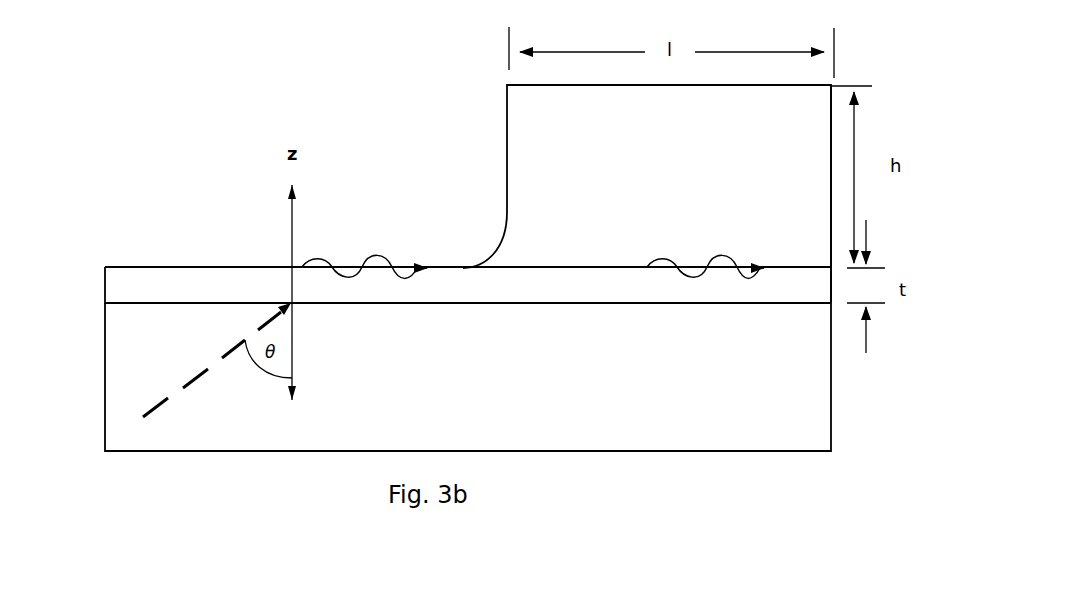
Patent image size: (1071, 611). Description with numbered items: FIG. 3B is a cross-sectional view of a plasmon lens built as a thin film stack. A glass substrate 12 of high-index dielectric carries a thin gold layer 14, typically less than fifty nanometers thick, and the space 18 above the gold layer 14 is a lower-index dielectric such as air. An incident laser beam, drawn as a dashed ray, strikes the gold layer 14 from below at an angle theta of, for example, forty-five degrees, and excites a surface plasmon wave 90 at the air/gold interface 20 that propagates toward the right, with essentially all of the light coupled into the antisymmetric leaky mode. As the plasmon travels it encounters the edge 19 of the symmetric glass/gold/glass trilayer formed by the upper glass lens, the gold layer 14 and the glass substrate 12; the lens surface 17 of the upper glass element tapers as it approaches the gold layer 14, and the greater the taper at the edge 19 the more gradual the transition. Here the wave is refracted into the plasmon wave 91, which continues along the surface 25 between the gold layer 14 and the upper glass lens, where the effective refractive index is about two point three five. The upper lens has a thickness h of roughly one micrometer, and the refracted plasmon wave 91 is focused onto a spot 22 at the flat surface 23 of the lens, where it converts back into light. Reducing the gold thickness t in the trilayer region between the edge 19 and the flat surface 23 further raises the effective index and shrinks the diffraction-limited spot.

The glass substrate 12 is at (468, 377).
The gold layer 14 is at (468, 285).
The lens surface 17 is at (507, 118).
The space above the gold layer 18 is at (214, 168).
The edge of trilayer structure 19 is at (464, 268).
The air/gold interface 20 is at (203, 267).
The spot 22 is at (830, 269).
The flat surface 23 is at (830, 143).
The trilayer region surface 25 is at (537, 267).
The surface plasmon wave 90 is at (372, 265).
The refracted plasmon wave 91 is at (708, 266).